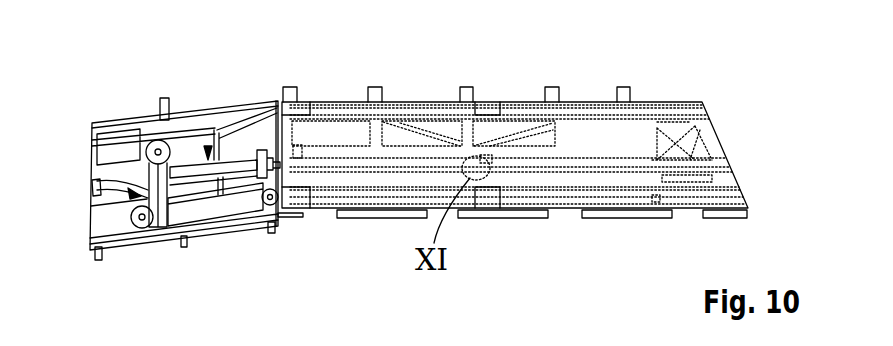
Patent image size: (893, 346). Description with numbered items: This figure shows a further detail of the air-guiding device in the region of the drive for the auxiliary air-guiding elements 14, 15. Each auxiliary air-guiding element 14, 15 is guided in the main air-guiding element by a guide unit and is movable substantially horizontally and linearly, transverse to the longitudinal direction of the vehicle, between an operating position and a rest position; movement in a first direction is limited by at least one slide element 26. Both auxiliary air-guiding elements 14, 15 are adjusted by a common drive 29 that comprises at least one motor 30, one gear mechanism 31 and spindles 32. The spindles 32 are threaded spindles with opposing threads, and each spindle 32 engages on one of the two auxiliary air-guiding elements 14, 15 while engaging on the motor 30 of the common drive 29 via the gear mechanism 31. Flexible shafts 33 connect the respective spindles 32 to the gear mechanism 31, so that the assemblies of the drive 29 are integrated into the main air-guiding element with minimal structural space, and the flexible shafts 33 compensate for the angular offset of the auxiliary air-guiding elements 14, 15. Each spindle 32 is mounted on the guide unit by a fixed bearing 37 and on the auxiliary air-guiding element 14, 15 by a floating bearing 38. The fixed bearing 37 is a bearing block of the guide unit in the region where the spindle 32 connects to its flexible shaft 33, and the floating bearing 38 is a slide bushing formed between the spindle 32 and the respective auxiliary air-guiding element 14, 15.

The auxiliary air-guiding element 14 is at (677, 106).
The auxiliary air-guiding element 15 is at (513, 115).
The slide element 26 is at (300, 100).
The common drive 29 is at (208, 146).
The motor 30 is at (213, 203).
The gear mechanism 31 is at (100, 193).
The spindle 32 is at (418, 160).
The flexible shaft 33 is at (125, 150).
The fixed bearing 37 is at (258, 152).
The floating bearing 38 is at (488, 168).